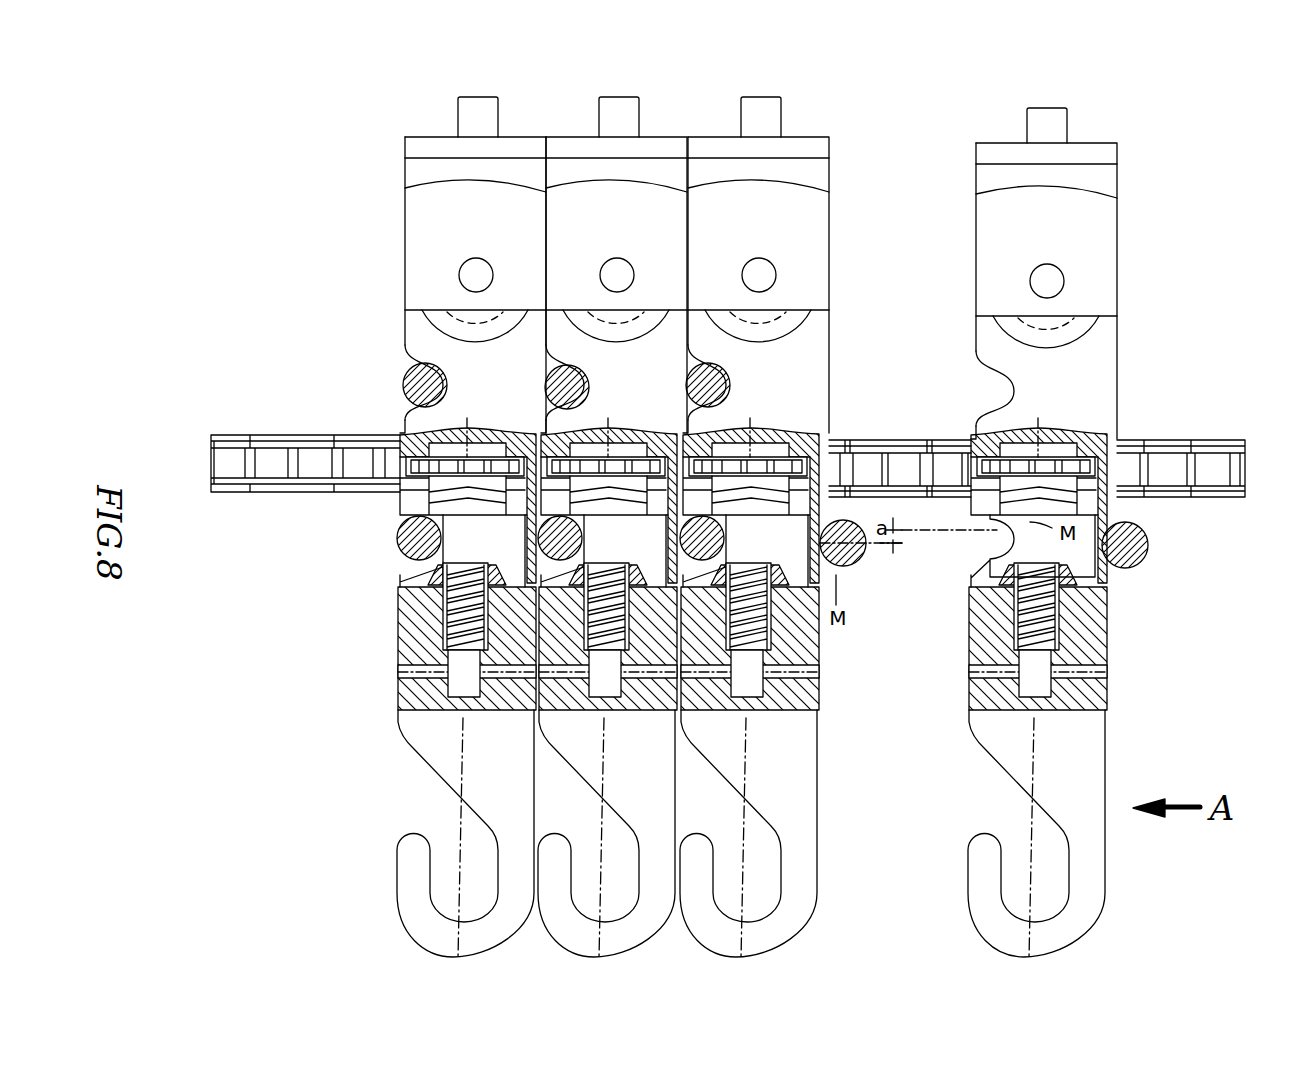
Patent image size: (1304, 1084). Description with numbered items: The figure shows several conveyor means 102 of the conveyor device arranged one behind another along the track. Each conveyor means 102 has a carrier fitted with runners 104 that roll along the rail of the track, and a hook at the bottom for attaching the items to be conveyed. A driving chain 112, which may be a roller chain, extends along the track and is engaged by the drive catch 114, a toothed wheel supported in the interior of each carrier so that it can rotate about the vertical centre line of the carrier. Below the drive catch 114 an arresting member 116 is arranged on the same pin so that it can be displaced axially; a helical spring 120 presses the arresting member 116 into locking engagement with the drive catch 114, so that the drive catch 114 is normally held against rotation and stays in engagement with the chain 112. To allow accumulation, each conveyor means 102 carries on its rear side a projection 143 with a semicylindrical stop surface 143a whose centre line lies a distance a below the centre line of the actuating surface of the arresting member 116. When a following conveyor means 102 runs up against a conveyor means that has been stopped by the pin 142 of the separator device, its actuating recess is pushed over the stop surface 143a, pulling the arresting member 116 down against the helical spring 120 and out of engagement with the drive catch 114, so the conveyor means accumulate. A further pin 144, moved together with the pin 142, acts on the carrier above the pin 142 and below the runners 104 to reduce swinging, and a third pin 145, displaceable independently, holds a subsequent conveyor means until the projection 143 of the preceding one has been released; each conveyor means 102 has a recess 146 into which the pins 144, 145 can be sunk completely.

The conveyor means 102 is at (430, 173).
The runners 104 is at (412, 324).
The driving chain 112 is at (225, 467).
The drive catch 114 is at (1140, 441).
The arresting member 116 is at (1097, 585).
The helical spring 120 is at (990, 640).
The pin 142 is at (400, 545).
The projection 143 is at (1150, 547).
The stop surface 143a is at (912, 562).
The further pin 144 is at (403, 384).
The third pin 145 is at (589, 389).
The recess 146 is at (982, 392).